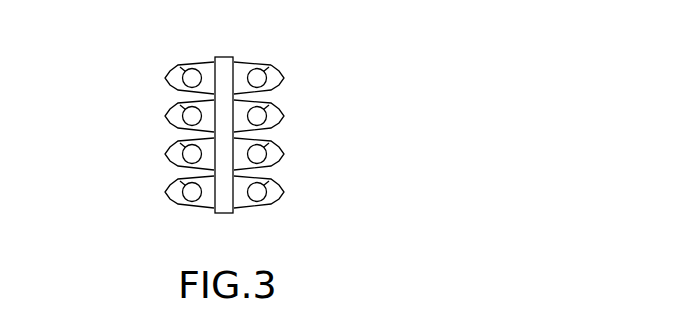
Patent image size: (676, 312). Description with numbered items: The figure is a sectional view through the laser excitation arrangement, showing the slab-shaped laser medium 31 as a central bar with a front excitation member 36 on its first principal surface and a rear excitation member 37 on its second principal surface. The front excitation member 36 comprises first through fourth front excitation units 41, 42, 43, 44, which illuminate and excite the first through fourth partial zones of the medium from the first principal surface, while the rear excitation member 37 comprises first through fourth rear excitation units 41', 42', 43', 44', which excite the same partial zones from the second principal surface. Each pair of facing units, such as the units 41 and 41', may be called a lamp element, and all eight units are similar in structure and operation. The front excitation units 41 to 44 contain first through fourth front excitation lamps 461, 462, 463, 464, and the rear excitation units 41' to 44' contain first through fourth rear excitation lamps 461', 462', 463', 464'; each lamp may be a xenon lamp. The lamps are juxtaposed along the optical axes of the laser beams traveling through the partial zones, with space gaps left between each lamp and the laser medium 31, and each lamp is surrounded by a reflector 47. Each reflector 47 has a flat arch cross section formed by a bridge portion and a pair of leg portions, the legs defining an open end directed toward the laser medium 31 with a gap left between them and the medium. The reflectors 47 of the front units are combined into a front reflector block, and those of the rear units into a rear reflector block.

The slab-shaped laser medium 31 is at (225, 57).
The front excitation member 36 is at (361, 135).
The rear excitation member 37 is at (88, 143).
The first front excitation unit 41 is at (298, 53).
The second front excitation unit 42 is at (298, 108).
The third front excitation unit 43 is at (298, 147).
The fourth front excitation unit 44 is at (298, 187).
The first rear excitation unit 41' is at (148, 71).
The second rear excitation unit 42' is at (148, 111).
The third rear excitation unit 43' is at (148, 151).
The fourth rear excitation unit 44' is at (148, 189).
The first front excitation lamp 461 is at (294, 65).
The second front excitation lamp 462 is at (294, 105).
The third front excitation lamp 463 is at (294, 144).
The fourth front excitation lamp 464 is at (294, 184).
The first rear excitation lamp 461' is at (157, 68).
The second rear excitation lamp 462' is at (157, 108).
The third rear excitation lamp 463' is at (157, 148).
The fourth rear excitation lamp 464' is at (157, 186).
The reflector 47 is at (248, 62).